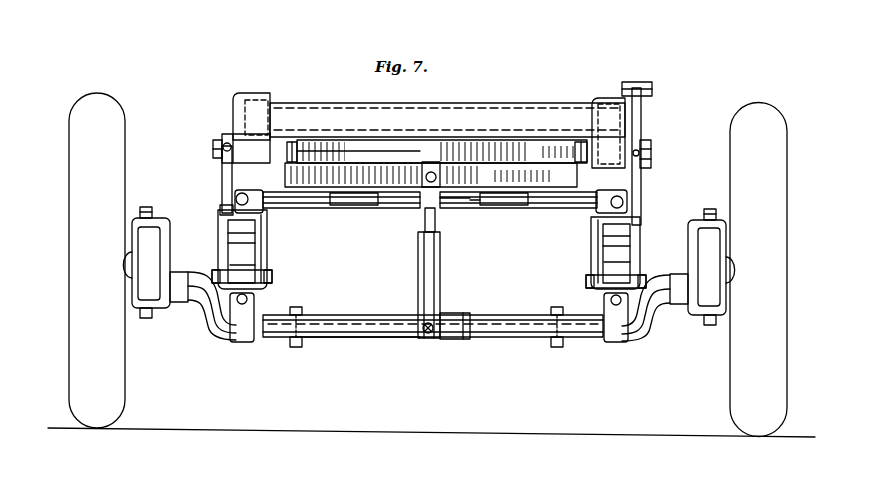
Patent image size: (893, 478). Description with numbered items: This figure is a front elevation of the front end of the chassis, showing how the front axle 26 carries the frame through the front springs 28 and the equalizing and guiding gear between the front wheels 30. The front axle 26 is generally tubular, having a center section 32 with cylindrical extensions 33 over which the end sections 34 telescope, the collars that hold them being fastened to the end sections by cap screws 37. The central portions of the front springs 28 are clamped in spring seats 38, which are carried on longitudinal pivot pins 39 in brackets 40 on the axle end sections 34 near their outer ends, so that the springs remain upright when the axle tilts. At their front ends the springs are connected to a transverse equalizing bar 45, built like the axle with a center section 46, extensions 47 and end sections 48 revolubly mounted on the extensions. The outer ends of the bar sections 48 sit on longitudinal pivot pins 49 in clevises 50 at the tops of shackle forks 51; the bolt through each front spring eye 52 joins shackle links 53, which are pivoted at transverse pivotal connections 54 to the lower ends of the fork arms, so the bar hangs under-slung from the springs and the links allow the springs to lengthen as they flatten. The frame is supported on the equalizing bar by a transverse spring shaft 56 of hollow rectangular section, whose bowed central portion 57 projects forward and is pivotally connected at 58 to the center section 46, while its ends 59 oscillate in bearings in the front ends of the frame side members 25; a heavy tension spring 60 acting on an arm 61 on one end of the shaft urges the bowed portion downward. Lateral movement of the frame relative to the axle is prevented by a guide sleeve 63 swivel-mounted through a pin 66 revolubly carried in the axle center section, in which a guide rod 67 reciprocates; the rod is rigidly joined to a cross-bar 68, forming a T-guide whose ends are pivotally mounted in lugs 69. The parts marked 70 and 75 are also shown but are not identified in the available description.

The side members 25 is at (251, 93).
The front axle 26 is at (341, 351).
The front springs 28 is at (267, 262).
The front wheels 30 is at (99, 100).
The center section 32 is at (458, 341).
The cylindrical extensions 33 is at (371, 340).
The end sections 34 is at (346, 320).
The cap screws 37 is at (302, 311).
The spring seats 38 is at (252, 328).
The longitudinal pivot pins 39 is at (216, 324).
The brackets 40 is at (242, 324).
The transverse equalizing bar 45 is at (486, 224).
The center section 46 is at (445, 207).
The extensions 47 is at (349, 209).
The end sections 48 is at (302, 209).
The pivot pins 49 is at (236, 197).
The clevises 50 is at (262, 206).
The shackle forks 51 is at (265, 250).
The front spring eye 52 is at (240, 232).
The shackle links 53 is at (232, 270).
The pivotal connections 54 is at (224, 270).
The transverse shaft 56 is at (497, 150).
The central portion 57 is at (440, 150).
The pivotal connection 58 is at (426, 186).
The ends 59 is at (215, 147).
The tension spring 60 is at (220, 209).
The arm 61 is at (222, 175).
The guide sleeve 63 is at (418, 279).
The pin 66 is at (427, 340).
The guide rod 67 is at (425, 224).
The cross-bar 68 is at (384, 168).
The lugs 69 is at (292, 142).
The upper cross bar 70 is at (348, 103).
The steering lever 75 is at (641, 122).